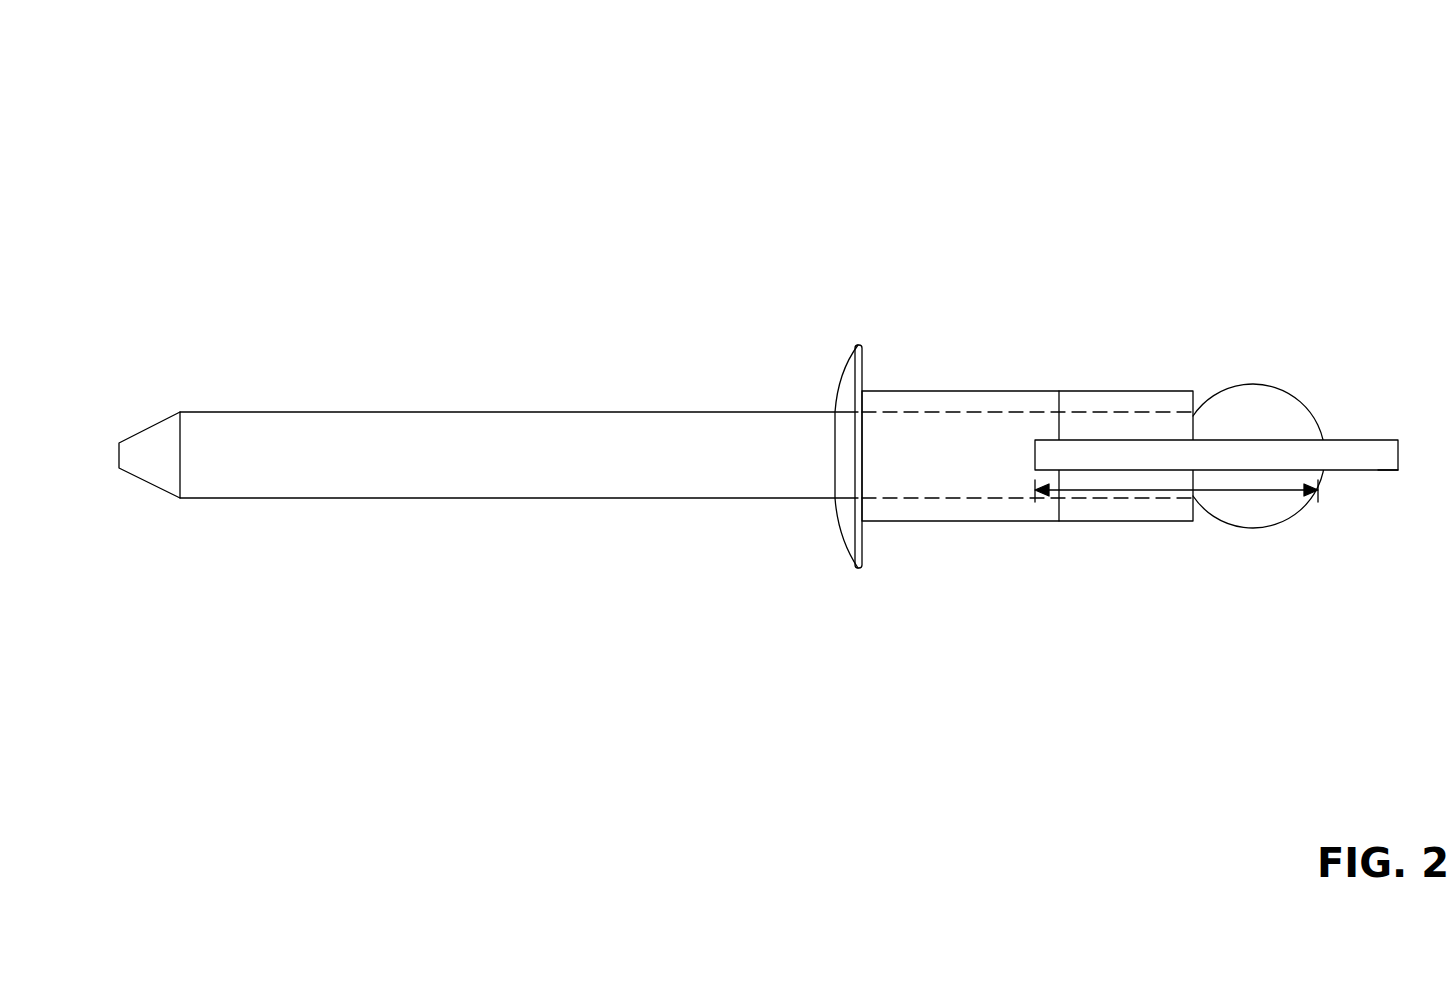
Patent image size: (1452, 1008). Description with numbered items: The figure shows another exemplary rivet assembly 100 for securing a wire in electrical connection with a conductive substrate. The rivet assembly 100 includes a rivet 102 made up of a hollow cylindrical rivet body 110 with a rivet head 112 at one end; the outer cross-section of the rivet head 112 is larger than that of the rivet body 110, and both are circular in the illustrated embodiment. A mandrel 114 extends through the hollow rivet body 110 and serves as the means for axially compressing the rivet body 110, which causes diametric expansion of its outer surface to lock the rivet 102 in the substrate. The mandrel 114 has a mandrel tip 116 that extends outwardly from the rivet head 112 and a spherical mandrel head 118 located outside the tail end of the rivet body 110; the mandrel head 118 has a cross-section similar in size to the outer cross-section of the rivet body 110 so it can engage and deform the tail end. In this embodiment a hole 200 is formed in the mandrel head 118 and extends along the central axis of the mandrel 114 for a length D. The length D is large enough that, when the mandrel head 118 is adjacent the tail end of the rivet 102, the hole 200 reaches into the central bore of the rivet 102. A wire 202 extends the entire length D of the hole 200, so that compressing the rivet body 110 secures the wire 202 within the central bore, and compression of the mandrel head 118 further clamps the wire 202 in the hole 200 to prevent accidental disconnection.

The rivet assembly 100 is at (973, 110).
The rivet 102 is at (1017, 297).
The rivet body 110 is at (1042, 391).
The rivet head 112 is at (856, 345).
The mandrel 114 is at (627, 412).
The mandrel tip 116 is at (160, 421).
The mandrel head 118 is at (1260, 384).
The hole 200 is at (1320, 434).
The wire 202 is at (1378, 471).
The length D is at (1155, 490).